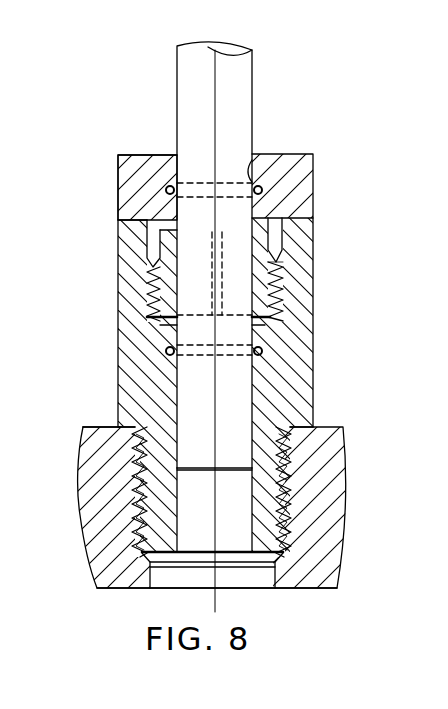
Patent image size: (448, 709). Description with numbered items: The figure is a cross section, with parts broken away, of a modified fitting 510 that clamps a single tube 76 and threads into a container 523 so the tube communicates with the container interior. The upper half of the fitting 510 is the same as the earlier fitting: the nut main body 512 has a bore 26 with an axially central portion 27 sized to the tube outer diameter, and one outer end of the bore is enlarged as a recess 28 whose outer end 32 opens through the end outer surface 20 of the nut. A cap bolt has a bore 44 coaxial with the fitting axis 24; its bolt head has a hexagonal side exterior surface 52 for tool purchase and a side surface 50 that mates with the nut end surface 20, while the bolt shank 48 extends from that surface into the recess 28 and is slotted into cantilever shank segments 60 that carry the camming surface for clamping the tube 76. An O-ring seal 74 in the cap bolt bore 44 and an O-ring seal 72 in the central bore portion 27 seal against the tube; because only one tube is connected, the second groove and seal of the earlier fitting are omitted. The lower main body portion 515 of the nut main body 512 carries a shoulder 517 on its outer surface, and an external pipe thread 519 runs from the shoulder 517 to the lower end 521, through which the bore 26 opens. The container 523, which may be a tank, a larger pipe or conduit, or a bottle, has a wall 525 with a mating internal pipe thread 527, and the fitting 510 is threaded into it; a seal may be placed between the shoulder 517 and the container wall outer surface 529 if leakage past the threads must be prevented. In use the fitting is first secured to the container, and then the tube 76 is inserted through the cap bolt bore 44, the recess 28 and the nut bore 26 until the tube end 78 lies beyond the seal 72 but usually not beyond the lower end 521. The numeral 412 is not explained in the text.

The tube 76 is at (174, 71).
The fitting axis 24 is at (218, 40).
The fitting 510 is at (127, 134).
The side exterior surface 52 is at (117, 168).
The end outer surface 20 is at (132, 220).
The recess outer end 32 is at (278, 229).
The bolt head side surface 50 is at (146, 223).
The recess 28 is at (278, 224).
The bolt shank 48 is at (270, 262).
The shank segments 60 is at (165, 297).
The O-ring seal 74 is at (170, 186).
The cap bolt bore 44 is at (246, 170).
The O-ring seal 72 is at (262, 350).
The nut main body 512 is at (110, 323).
The bore 26 is at (176, 370).
The container wall 525 is at (108, 508).
The container 523 is at (76, 543).
The container wall outer surface 529 is at (107, 427).
The shoulder 517 is at (138, 440).
The lower main body portion 515 is at (146, 462).
The external pipe thread 519 is at (288, 502).
The internal pipe thread 527 is at (284, 513).
The lower end 521 is at (158, 589).
The tube end 78 is at (230, 472).
The axially central portion 27 is at (10, 201).
The element 412 is at (15, 294).